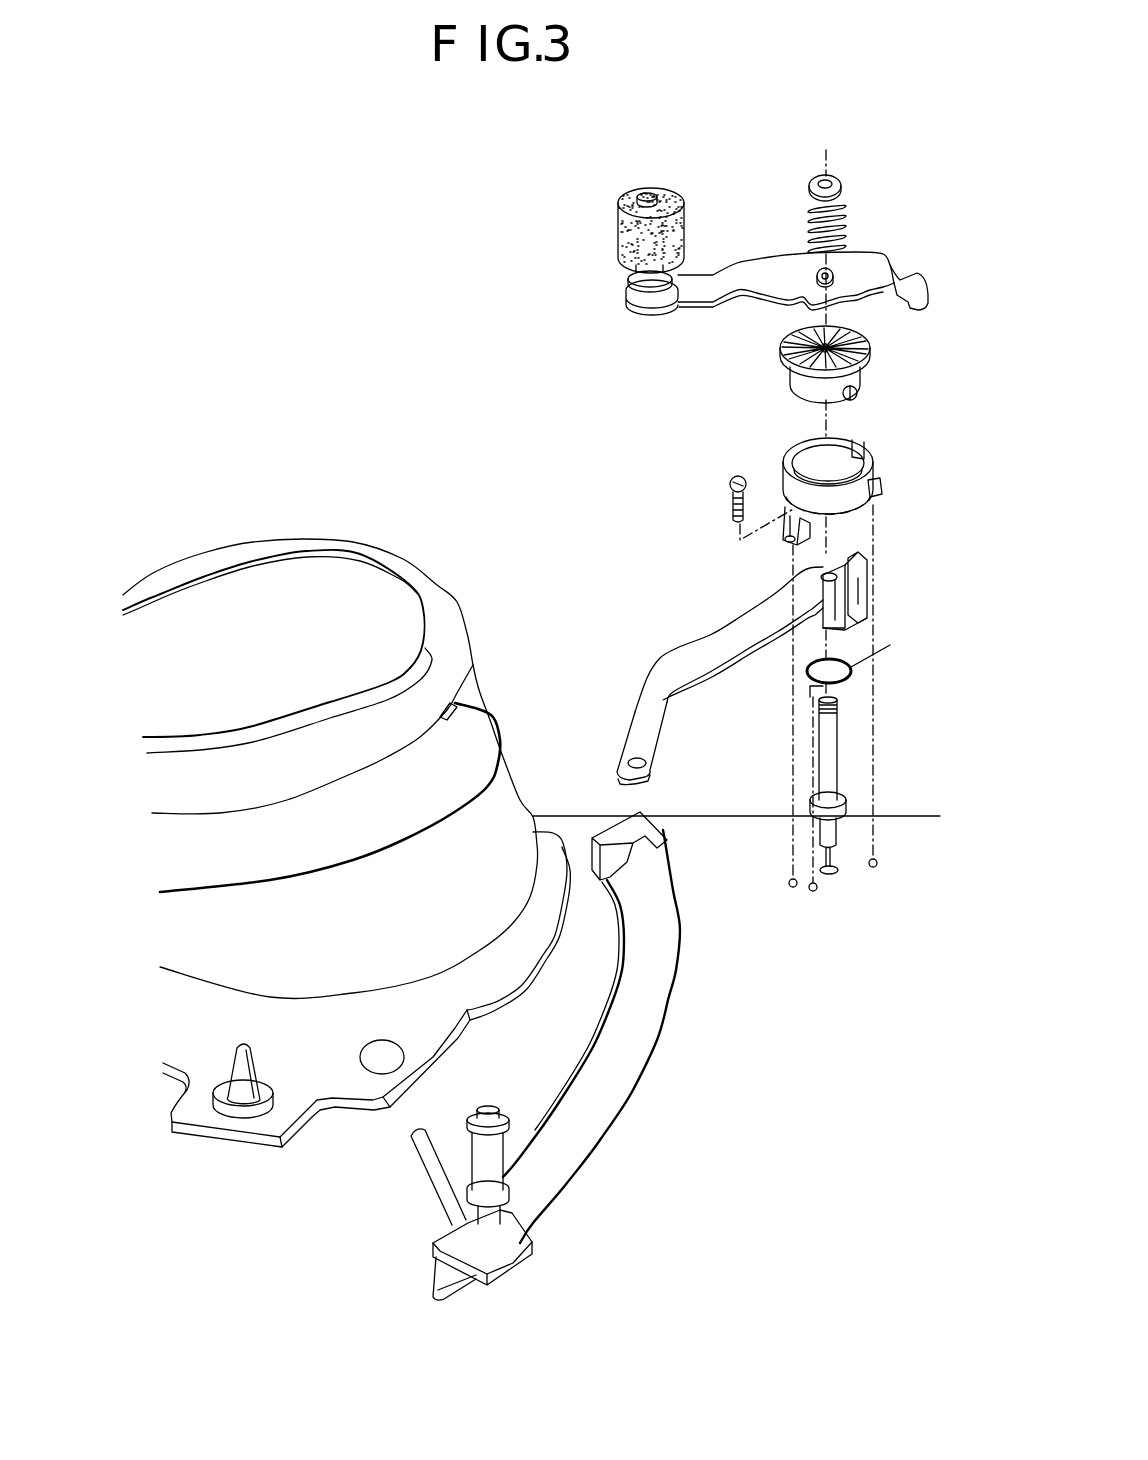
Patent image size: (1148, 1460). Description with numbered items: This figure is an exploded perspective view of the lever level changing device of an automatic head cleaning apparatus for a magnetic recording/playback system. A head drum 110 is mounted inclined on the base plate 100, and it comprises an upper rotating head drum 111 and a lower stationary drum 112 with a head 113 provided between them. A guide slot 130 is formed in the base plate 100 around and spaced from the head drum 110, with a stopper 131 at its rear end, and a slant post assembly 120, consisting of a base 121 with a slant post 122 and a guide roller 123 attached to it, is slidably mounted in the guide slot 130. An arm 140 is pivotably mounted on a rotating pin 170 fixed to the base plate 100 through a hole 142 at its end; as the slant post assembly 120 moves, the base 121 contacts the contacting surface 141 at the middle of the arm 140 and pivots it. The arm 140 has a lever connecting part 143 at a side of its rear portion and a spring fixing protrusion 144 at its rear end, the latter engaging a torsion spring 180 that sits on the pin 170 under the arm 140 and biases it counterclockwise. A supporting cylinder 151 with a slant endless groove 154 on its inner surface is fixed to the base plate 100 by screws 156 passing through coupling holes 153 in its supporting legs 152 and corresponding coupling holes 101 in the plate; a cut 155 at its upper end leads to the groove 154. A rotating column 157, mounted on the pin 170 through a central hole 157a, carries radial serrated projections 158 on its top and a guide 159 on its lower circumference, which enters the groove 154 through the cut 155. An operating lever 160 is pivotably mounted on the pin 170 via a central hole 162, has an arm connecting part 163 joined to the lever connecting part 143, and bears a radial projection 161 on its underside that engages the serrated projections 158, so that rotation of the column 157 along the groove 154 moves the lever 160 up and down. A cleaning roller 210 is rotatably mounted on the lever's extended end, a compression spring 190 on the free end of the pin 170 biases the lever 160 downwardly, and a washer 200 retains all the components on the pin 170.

The base plate 100 is at (910, 830).
The coupling holes 101 is at (873, 870).
The head drum 110 is at (330, 711).
The upper rotating head drum 111 is at (433, 577).
The lower stationary drum 112 is at (473, 713).
The head 113 is at (455, 703).
The slant post assembly 120 is at (459, 1203).
The base 121 is at (510, 1253).
The slant post 122 is at (420, 1153).
The guide roller 123 is at (510, 1153).
The guide slot 130 is at (628, 1027).
The stopper 131 is at (667, 830).
The arm 140 is at (783, 668).
The contacting surface 141 is at (657, 667).
The hole 142 is at (867, 593).
The lever connecting part 143 is at (873, 627).
The spring fixing protrusion 144 is at (867, 567).
The supporting cylinder 151 is at (833, 477).
The supporting legs 152 is at (880, 487).
The coupling hole 153 is at (810, 523).
The slant endless groove 154 is at (807, 463).
The cut 155 is at (873, 447).
The screw 156 is at (740, 476).
The rotating column 157 is at (825, 357).
The hole 157a is at (805, 328).
The radial serrated projections 158 is at (782, 360).
The guide 159 is at (863, 392).
The operating lever 160 is at (843, 212).
The radial projection 161 is at (808, 301).
The central hole 162 is at (812, 270).
The arm connecting part 163 is at (925, 282).
The rotating pin 170 is at (830, 743).
The torsion spring 180 is at (851, 667).
The compression spring 190 is at (845, 212).
The washer 200 is at (843, 180).
The cleaning roller 210 is at (598, 250).